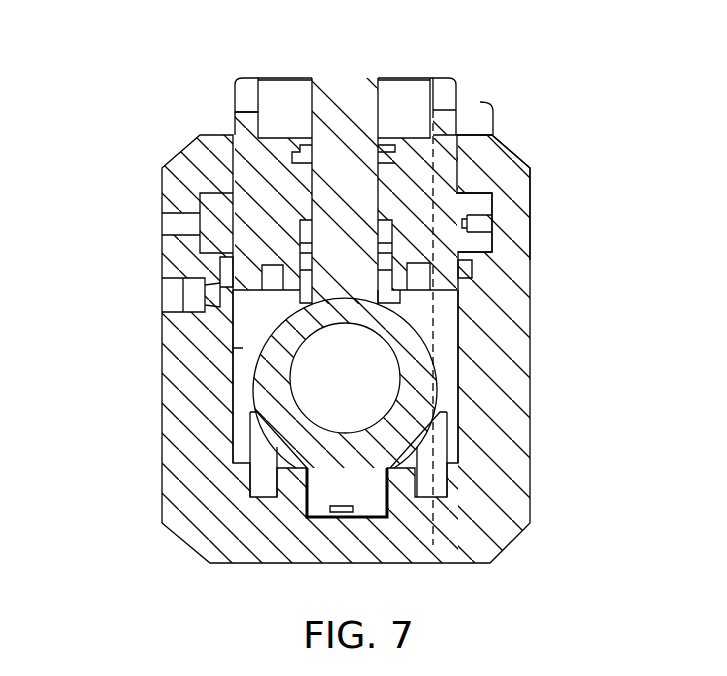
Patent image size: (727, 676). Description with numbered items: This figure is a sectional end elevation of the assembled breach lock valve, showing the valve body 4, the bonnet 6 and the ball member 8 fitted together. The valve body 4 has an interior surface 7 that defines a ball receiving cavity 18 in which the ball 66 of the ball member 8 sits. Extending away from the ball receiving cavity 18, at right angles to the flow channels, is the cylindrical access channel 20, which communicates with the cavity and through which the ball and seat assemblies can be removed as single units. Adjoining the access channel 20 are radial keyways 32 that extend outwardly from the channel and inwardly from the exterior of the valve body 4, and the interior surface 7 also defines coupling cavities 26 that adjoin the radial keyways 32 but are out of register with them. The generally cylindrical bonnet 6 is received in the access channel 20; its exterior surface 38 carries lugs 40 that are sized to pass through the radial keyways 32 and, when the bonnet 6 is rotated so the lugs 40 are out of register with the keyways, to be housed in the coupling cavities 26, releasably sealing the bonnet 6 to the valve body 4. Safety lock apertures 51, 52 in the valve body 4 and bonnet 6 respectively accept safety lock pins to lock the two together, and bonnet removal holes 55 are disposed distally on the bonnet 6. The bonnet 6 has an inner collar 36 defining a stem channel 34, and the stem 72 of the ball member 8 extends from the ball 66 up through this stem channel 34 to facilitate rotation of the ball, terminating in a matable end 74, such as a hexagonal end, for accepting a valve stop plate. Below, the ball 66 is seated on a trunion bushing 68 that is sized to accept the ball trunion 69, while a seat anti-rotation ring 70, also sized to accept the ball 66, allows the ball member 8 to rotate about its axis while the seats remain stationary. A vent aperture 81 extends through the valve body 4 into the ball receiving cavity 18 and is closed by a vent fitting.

The valve body 4 is at (162, 497).
The bonnet 6 is at (233, 122).
The interior surface 7 is at (310, 203).
The ball member 8 is at (233, 148).
The ball receiving cavity 18 is at (162, 320).
The access channel 20 is at (500, 152).
The coupling cavity 26 is at (493, 197).
The radial keyway 32 is at (493, 123).
The stem channel 34 is at (390, 262).
The inner collar 36 is at (432, 274).
The exterior surface 38 is at (233, 87).
The lug 40 is at (228, 200).
The safety lock aperture 51 is at (167, 223).
The safety lock aperture 52 is at (487, 222).
The bonnet removal hole 55 is at (457, 90).
The ball 66 is at (253, 398).
The trunion bushing 68 is at (300, 490).
The ball trunion 69 is at (330, 510).
The seat anti-rotation ring 70 is at (250, 478).
The stem 72 is at (287, 93).
The matable end 74 is at (378, 90).
The vent aperture 81 is at (165, 297).